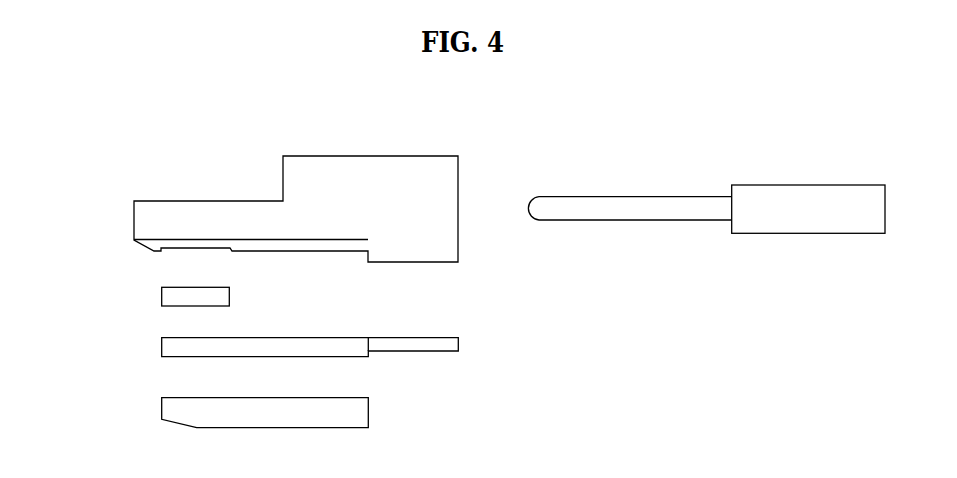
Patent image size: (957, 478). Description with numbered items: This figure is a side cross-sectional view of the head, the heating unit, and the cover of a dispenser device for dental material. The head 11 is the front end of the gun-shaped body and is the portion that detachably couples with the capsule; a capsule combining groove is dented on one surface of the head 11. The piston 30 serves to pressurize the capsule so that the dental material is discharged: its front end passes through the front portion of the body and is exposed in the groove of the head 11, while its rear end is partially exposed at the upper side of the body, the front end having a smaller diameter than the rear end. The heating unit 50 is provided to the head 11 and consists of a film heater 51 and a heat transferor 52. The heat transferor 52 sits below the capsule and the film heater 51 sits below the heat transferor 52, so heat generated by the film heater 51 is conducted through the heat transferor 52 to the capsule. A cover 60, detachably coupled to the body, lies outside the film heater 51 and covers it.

The head 11 is at (363, 172).
The piston 30 is at (638, 188).
The heating unit 50 is at (250, 318).
The film heater 51 is at (276, 345).
The heat transferor 52 is at (172, 299).
The cover 60 is at (172, 414).